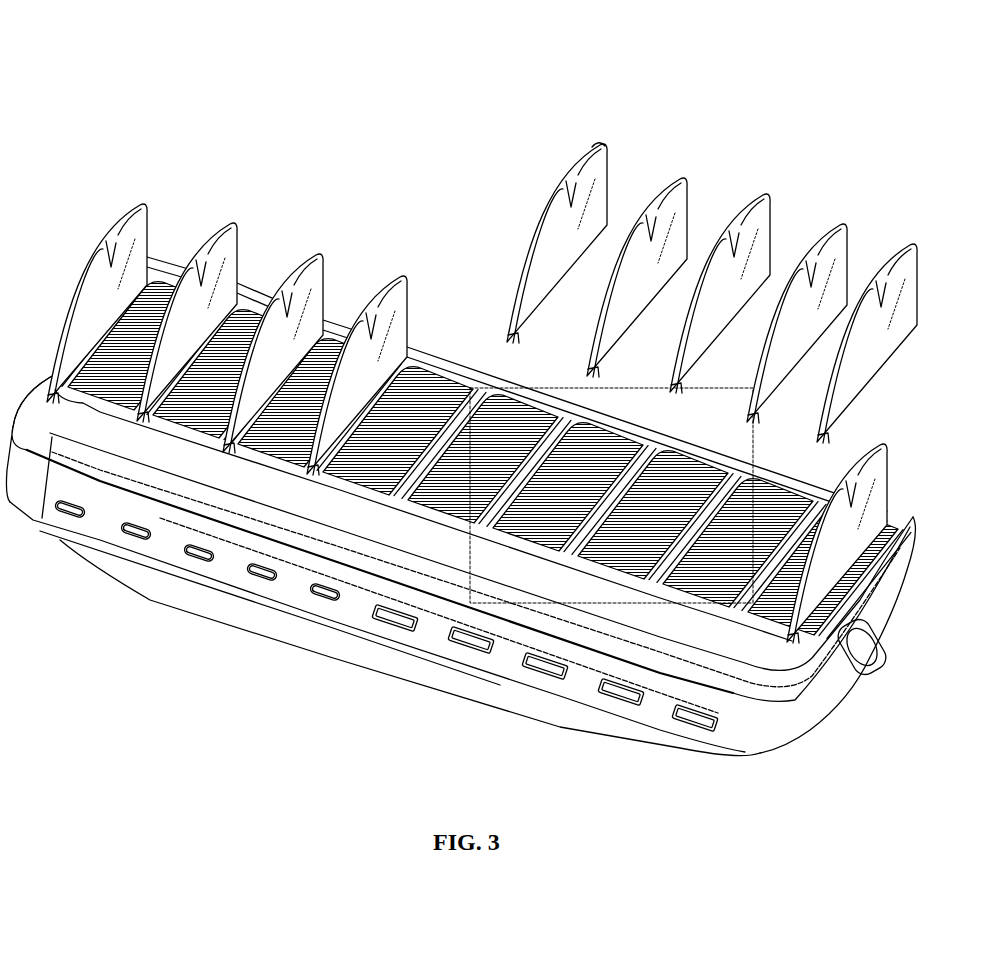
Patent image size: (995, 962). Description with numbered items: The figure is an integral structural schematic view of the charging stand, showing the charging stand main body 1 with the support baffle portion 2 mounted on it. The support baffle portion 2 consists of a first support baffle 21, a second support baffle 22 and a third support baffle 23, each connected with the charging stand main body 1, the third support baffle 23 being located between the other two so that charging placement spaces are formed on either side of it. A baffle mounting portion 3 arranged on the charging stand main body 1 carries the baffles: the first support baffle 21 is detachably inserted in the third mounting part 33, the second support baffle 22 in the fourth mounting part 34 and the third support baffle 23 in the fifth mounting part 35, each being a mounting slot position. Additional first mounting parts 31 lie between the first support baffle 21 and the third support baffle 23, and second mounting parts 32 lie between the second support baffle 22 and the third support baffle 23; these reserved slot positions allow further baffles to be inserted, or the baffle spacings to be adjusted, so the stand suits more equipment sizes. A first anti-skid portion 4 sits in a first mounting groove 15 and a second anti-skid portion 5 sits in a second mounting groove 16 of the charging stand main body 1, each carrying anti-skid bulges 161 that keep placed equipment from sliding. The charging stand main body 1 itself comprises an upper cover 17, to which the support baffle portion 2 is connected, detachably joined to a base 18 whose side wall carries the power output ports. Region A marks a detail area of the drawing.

The charging stand main body 1 is at (460, 486).
The support baffle portion 2 is at (532, 203).
The first support baffle 21 is at (598, 143).
The second support baffle 22 is at (908, 243).
The third support baffle 23 is at (745, 472).
The baffle mounting portion 3 is at (568, 577).
The first mounting part 31 is at (392, 614).
The second mounting part 32 is at (700, 545).
The third mounting part 33 is at (340, 591).
The fourth mounting part 34 is at (770, 535).
The fifth mounting part 35 is at (605, 548).
The first anti-skid portion 4 is at (660, 442).
The second anti-skid portion 5 is at (828, 448).
The first mounting groove 15 is at (412, 630).
The second mounting groove 16 is at (612, 696).
The anti-skid bulge 161 is at (512, 522).
The upper cover 17 is at (60, 417).
The base 18 is at (110, 518).
The detail region A is at (517, 385).